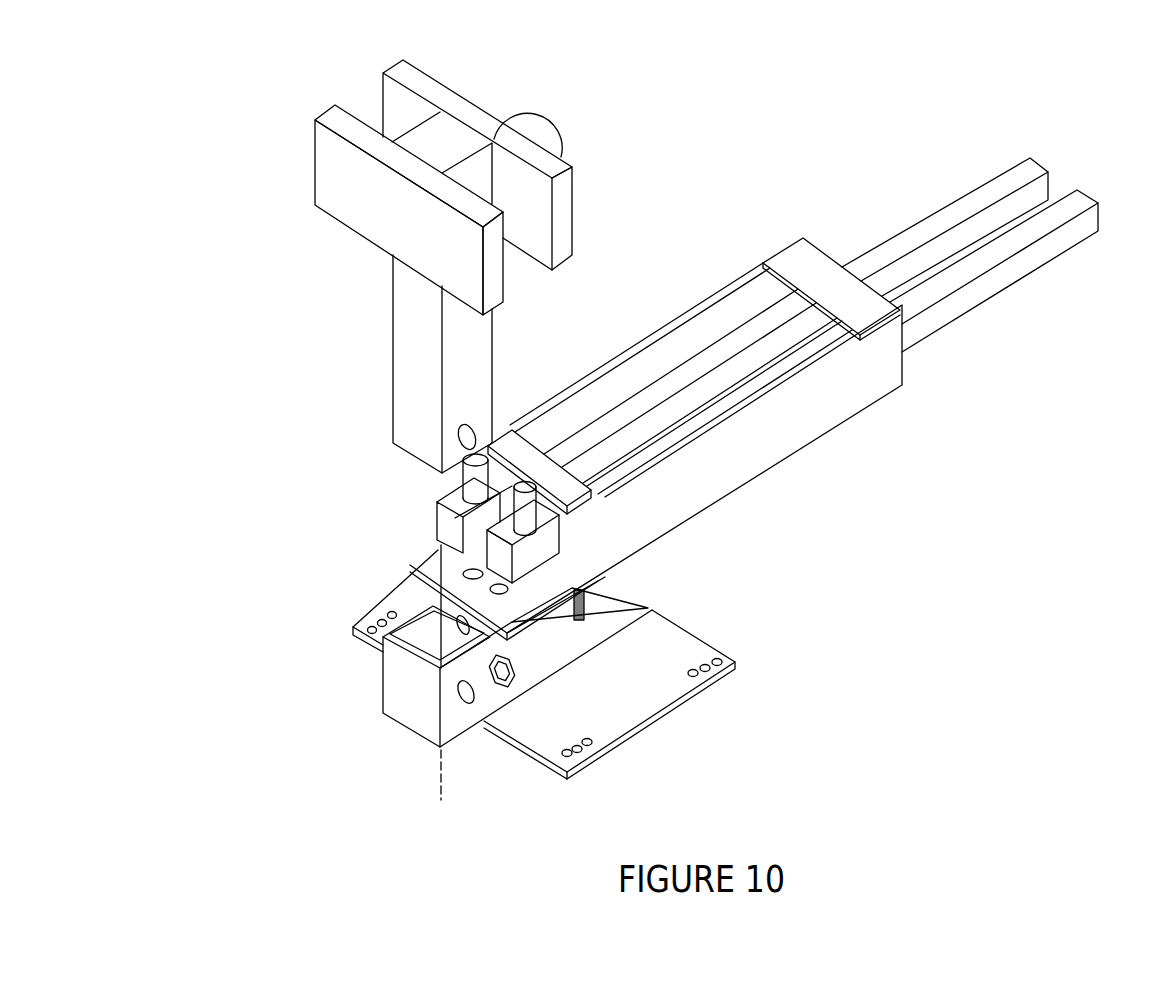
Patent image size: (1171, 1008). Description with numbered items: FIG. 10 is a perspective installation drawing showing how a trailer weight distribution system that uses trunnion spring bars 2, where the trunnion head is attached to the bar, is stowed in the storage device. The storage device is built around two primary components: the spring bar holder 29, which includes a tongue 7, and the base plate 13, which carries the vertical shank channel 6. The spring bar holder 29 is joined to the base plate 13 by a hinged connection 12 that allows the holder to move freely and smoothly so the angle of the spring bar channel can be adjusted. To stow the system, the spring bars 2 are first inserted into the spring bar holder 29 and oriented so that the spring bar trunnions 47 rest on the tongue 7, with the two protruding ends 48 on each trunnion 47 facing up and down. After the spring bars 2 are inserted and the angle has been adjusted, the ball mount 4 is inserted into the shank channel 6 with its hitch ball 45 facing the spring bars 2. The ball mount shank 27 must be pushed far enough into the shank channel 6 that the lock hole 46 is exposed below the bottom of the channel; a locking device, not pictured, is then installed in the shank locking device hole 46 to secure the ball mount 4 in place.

The trunnion spring bars 2 is at (1014, 172).
The ball mount 4 is at (284, 194).
The shank channel 6 is at (380, 648).
The tongue 7 is at (443, 665).
The hinged connection 12 is at (497, 698).
The base plate 13 is at (712, 692).
The ball mount shank 27 is at (420, 340).
The spring bar holder 29 is at (822, 466).
The hitch ball 45 is at (540, 118).
The lock hole 46 is at (458, 437).
The spring bar trunnions 47 is at (455, 529).
The protruding ends 48 is at (480, 474).